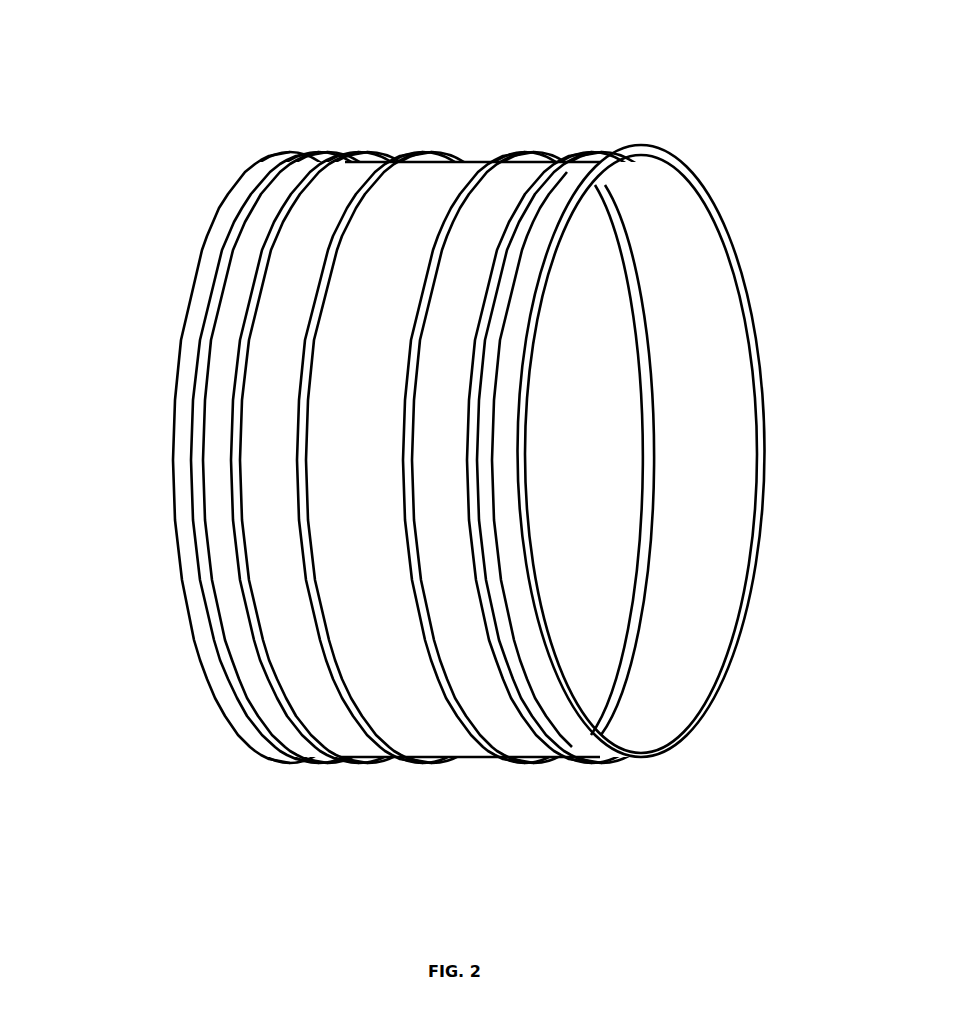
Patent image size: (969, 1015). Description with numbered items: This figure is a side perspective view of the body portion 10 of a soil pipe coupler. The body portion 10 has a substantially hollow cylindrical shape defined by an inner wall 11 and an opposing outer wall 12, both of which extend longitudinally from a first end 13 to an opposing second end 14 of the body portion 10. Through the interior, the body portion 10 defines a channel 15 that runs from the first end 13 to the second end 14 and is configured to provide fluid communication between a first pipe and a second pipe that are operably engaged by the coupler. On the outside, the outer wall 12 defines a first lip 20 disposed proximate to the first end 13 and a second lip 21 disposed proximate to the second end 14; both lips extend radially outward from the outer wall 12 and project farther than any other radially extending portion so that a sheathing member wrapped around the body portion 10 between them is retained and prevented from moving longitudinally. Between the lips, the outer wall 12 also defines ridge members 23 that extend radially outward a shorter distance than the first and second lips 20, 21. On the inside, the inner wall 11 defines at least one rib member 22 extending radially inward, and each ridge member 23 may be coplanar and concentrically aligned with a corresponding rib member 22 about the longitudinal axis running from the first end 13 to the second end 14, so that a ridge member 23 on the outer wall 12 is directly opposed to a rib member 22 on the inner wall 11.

The body portion 10 is at (270, 82).
The inner wall 11 is at (688, 518).
The outer wall 12 is at (450, 180).
The first end 13 is at (155, 420).
The second end 14 is at (775, 438).
The channel 15 is at (597, 345).
The first lip 20 is at (222, 250).
The second lip 21 is at (570, 197).
The rib member 22 is at (640, 627).
The ridge member 23 is at (355, 776).